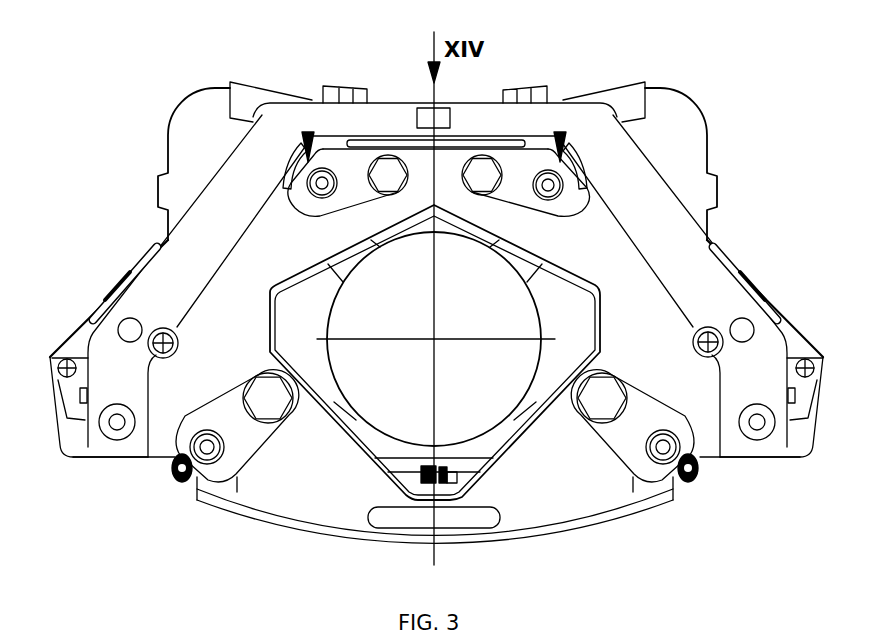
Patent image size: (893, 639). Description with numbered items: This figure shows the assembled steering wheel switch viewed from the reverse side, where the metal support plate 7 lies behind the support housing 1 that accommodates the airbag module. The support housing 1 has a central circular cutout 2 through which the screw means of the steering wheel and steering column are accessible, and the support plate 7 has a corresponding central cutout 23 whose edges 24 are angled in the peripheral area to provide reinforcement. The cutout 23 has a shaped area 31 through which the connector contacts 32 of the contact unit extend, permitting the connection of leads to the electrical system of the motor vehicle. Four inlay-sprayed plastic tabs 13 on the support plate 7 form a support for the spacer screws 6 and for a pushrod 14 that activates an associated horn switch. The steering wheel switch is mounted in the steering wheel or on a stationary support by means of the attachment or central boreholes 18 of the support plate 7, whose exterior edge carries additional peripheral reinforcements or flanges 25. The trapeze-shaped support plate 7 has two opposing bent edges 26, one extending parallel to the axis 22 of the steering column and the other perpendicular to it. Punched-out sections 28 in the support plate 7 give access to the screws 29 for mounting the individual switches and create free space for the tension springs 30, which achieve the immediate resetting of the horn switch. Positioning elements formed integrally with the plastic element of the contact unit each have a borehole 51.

The support housing 1 is at (680, 119).
The central circular cutout 2 is at (408, 305).
The spacer screws 6 is at (388, 160).
The support plate 7 is at (598, 226).
The inlay-sprayed plastic tabs 13 is at (287, 203).
The pushrod 14 is at (683, 453).
The attachment or central boreholes 18 is at (754, 332).
The axis 22 is at (433, 50).
The central cutout 23 is at (352, 427).
The edges 24 is at (523, 437).
The peripheral reinforcements or flanges 25 is at (652, 510).
The bent edges 26 is at (133, 457).
The punched-out sections 28 is at (306, 131).
The screws 29 is at (700, 337).
The tension springs 30 is at (288, 167).
The shaped area 31 is at (400, 478).
The connector contacts 32 is at (447, 484).
The borehole 51 is at (830, 349).